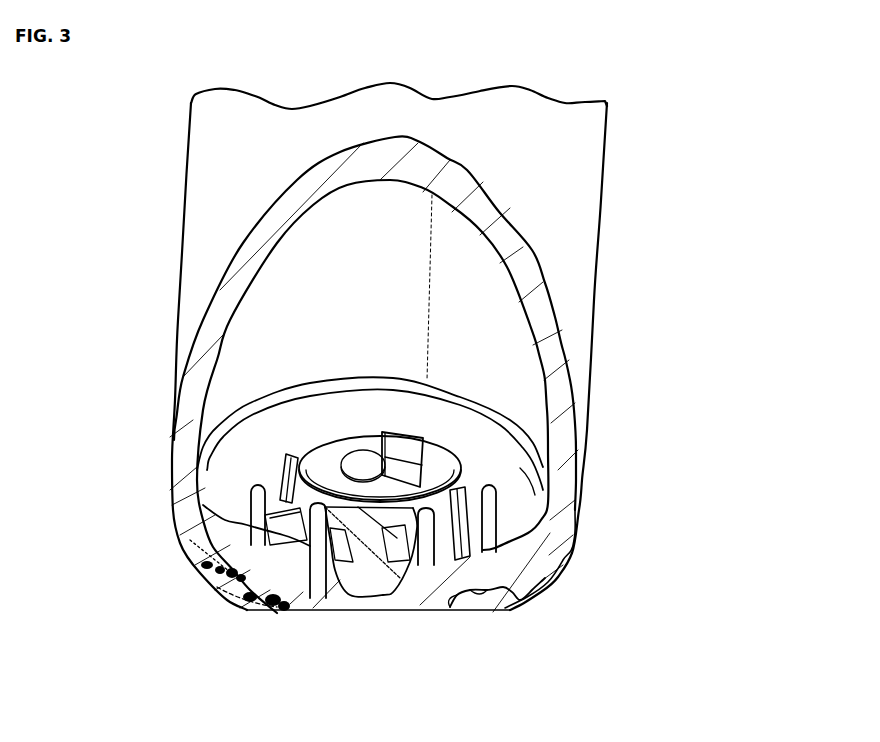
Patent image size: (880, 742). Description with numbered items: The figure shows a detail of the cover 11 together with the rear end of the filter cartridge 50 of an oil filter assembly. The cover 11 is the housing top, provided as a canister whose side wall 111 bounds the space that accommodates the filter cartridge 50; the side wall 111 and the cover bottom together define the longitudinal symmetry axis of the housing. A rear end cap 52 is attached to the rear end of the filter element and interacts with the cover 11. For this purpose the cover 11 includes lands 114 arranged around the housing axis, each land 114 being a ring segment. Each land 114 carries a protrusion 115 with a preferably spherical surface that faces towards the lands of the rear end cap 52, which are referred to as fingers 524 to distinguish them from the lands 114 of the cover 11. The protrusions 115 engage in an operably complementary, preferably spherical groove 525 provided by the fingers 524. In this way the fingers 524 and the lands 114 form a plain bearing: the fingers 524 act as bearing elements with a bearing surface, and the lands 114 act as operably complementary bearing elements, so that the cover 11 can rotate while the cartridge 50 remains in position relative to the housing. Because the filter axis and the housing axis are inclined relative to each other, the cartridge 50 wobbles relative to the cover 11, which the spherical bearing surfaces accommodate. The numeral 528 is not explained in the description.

The cover 11 is at (600, 224).
The side wall 111 is at (488, 201).
The land 114 is at (247, 523).
The protrusion 115 is at (497, 530).
The filter cartridge 50 is at (507, 340).
The rear end cap 52 is at (527, 437).
The fingers 524 is at (405, 448).
The groove 525 is at (283, 472).
The recess 528 is at (531, 484).